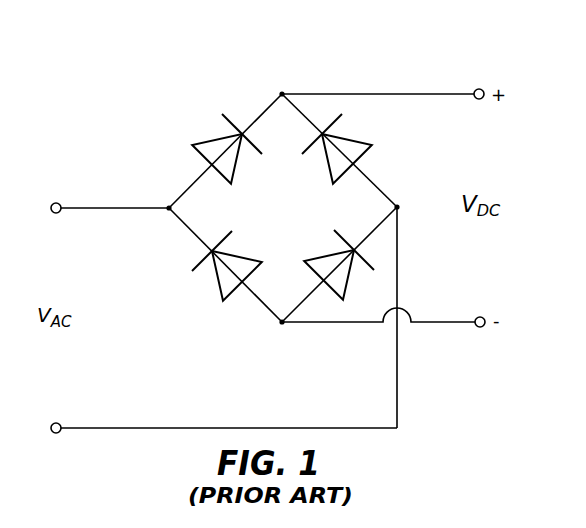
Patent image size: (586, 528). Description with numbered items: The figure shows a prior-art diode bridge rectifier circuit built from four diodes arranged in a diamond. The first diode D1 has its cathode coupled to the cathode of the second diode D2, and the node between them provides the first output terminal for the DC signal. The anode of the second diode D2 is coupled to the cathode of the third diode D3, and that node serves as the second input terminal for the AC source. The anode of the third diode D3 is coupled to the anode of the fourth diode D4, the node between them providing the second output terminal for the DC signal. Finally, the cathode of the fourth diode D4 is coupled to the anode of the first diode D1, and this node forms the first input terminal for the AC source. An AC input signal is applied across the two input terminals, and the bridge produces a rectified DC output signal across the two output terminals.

The first diode D1 is at (226, 146).
The second diode D2 is at (340, 146).
The third diode D3 is at (341, 268).
The fourth diode D4 is at (226, 268).